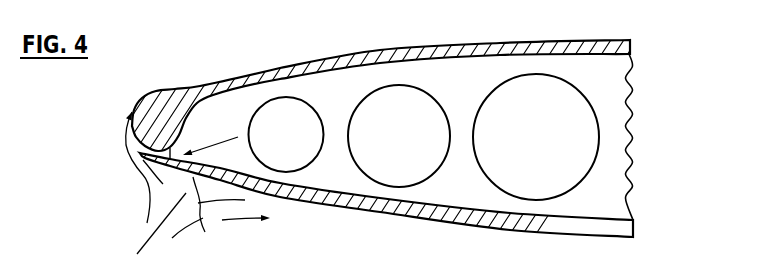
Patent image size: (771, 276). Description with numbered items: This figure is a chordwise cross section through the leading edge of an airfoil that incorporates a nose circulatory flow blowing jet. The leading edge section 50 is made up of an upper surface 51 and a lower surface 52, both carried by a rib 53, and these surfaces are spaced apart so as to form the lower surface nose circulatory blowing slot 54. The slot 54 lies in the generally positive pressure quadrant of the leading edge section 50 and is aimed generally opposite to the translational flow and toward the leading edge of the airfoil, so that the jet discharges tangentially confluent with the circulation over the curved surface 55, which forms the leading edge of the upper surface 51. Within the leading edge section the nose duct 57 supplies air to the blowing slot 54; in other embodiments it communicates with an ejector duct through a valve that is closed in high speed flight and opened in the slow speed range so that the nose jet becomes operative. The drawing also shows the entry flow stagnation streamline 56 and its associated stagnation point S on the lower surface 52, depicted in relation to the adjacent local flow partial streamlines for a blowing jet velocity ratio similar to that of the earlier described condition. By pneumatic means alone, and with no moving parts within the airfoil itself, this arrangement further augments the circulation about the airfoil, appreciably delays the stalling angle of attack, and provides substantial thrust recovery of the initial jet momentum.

The leading edge section 50 is at (344, 130).
The upper surface 51 is at (378, 50).
The lower surface 52 is at (436, 226).
The rib 53 is at (613, 148).
The lower surface nose circulatory blowing slot 54 is at (162, 159).
The curved surface 55 is at (138, 168).
The entry flow stagnation streamline 56 is at (143, 247).
The nose duct 57 is at (281, 117).
The stagnation point S is at (221, 214).